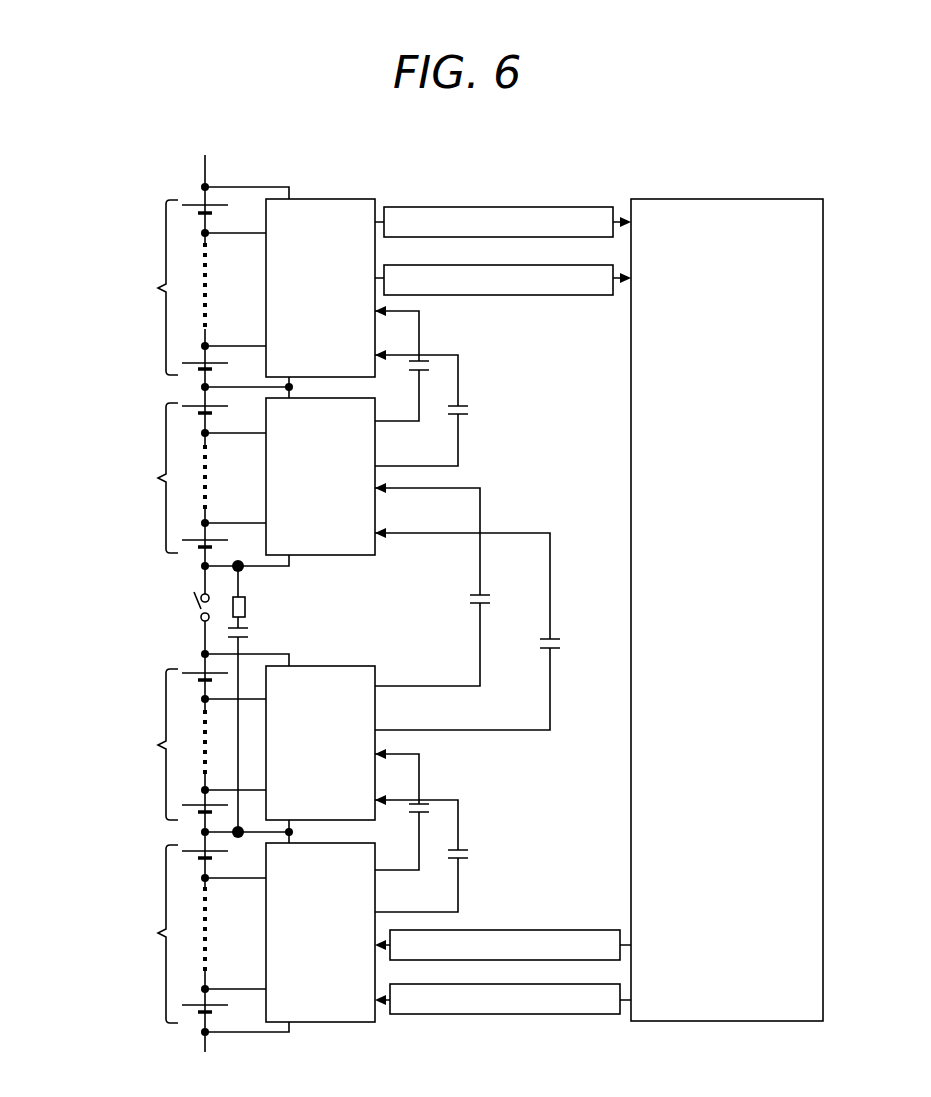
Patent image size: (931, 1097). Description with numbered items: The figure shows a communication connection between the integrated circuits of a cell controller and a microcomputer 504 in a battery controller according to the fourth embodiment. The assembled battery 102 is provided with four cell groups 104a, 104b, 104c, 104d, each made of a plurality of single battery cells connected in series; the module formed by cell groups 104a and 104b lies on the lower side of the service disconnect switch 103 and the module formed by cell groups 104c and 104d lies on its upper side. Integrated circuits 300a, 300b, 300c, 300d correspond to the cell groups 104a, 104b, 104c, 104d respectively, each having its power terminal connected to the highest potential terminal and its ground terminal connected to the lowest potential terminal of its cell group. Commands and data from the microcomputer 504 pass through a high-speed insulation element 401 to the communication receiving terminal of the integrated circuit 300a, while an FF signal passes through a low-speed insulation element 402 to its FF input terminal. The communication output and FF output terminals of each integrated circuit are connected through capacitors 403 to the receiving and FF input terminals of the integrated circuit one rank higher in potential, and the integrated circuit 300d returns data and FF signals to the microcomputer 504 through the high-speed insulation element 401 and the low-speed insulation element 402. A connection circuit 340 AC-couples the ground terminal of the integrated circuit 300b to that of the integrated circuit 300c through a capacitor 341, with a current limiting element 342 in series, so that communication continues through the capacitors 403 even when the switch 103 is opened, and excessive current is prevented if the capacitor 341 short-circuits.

The assembled battery 102 is at (170, 603).
The service disconnect switch 103 is at (159, 606).
The cell group 104a is at (153, 934).
The cell group 104b is at (153, 744).
The cell group 104c is at (153, 478).
The cell group 104d is at (153, 287).
The integrated circuit 300a is at (353, 949).
The integrated circuit 300b is at (369, 731).
The integrated circuit 300c is at (368, 486).
The integrated circuit 300d is at (357, 271).
The connection circuit 340 is at (340, 699).
The capacitor 341 is at (295, 630).
The current limiting element 342 is at (342, 608).
The high-speed insulation element 401 is at (503, 583).
The low-speed insulation element 402 is at (503, 639).
The capacitor 403 is at (425, 353).
The microcomputer 504 is at (729, 599).